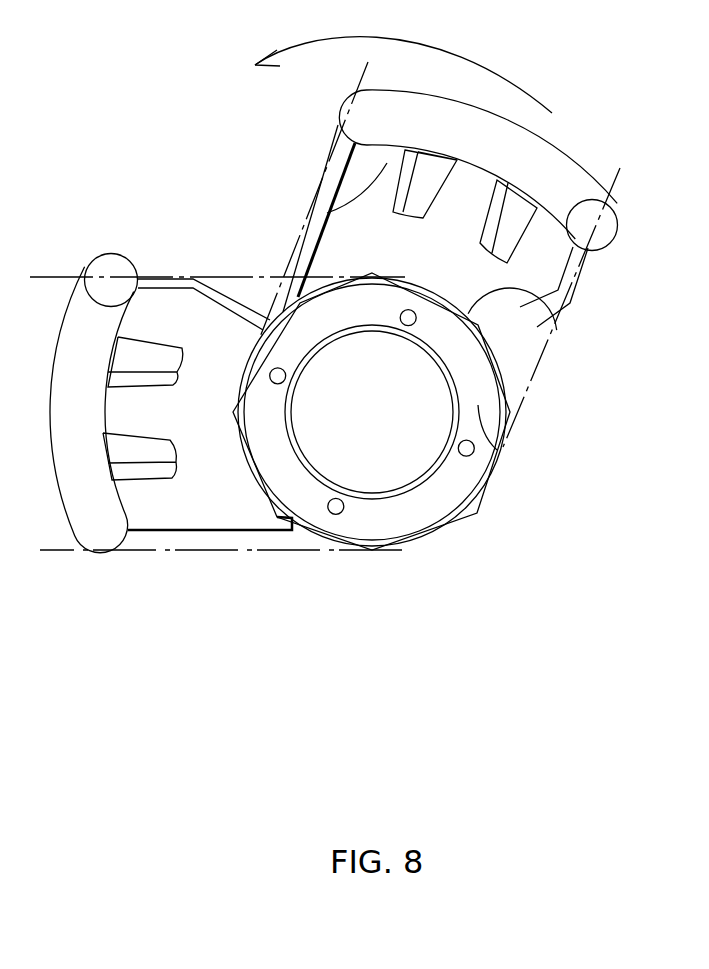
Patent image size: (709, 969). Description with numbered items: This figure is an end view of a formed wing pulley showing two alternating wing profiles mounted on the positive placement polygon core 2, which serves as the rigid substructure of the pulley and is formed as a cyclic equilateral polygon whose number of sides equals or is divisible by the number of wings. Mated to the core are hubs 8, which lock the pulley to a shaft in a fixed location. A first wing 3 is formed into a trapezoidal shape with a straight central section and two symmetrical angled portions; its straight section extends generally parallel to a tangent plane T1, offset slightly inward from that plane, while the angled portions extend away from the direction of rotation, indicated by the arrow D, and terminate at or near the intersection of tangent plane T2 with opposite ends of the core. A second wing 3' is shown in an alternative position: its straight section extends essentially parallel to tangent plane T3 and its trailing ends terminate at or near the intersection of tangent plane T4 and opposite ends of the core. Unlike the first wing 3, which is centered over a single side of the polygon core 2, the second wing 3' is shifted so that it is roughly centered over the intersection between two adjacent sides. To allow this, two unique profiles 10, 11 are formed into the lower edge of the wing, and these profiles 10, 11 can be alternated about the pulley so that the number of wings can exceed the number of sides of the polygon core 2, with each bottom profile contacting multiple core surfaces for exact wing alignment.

The polygon core 2 is at (480, 478).
The wing 3 is at (423, 201).
The second wing 3' is at (160, 376).
The hub 8 is at (502, 453).
The wing profile 10 is at (553, 330).
The wing profile 11 is at (250, 477).
The tangent plane T1 is at (362, 83).
The tangent plane T2 is at (617, 203).
The tangent plane T3 is at (60, 550).
The tangent plane T4 is at (40, 278).
The direction of rotation D is at (392, 75).